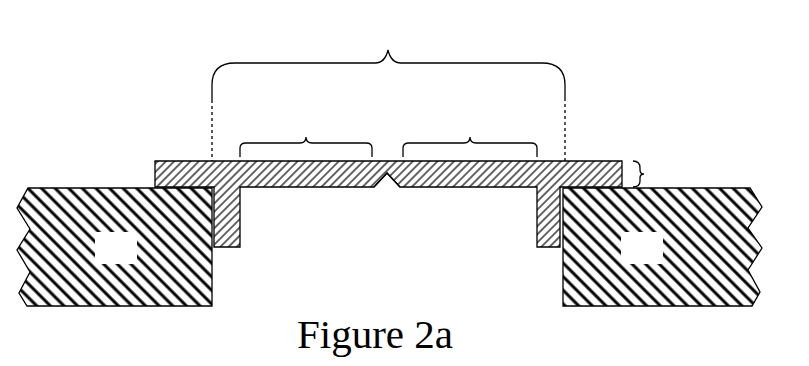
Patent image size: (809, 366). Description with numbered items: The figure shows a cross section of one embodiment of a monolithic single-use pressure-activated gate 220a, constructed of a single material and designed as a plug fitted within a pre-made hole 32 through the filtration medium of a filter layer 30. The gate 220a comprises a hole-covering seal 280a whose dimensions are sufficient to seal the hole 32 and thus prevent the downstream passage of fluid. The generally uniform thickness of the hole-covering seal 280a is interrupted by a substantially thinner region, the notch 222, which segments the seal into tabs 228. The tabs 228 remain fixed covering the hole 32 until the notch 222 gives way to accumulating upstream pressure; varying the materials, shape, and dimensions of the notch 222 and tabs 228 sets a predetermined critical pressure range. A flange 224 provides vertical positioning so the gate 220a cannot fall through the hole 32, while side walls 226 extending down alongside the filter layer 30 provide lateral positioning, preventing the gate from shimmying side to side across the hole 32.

The filter layer 30 is at (98, 261).
The hole 32 is at (368, 291).
The pressure-activated gate 220a is at (590, 88).
The notch 222 is at (383, 160).
The flange 224 is at (178, 161).
The side wall 226 is at (240, 228).
The tabs 228 is at (388, 130).
The hole-covering seal 280a is at (730, 137).